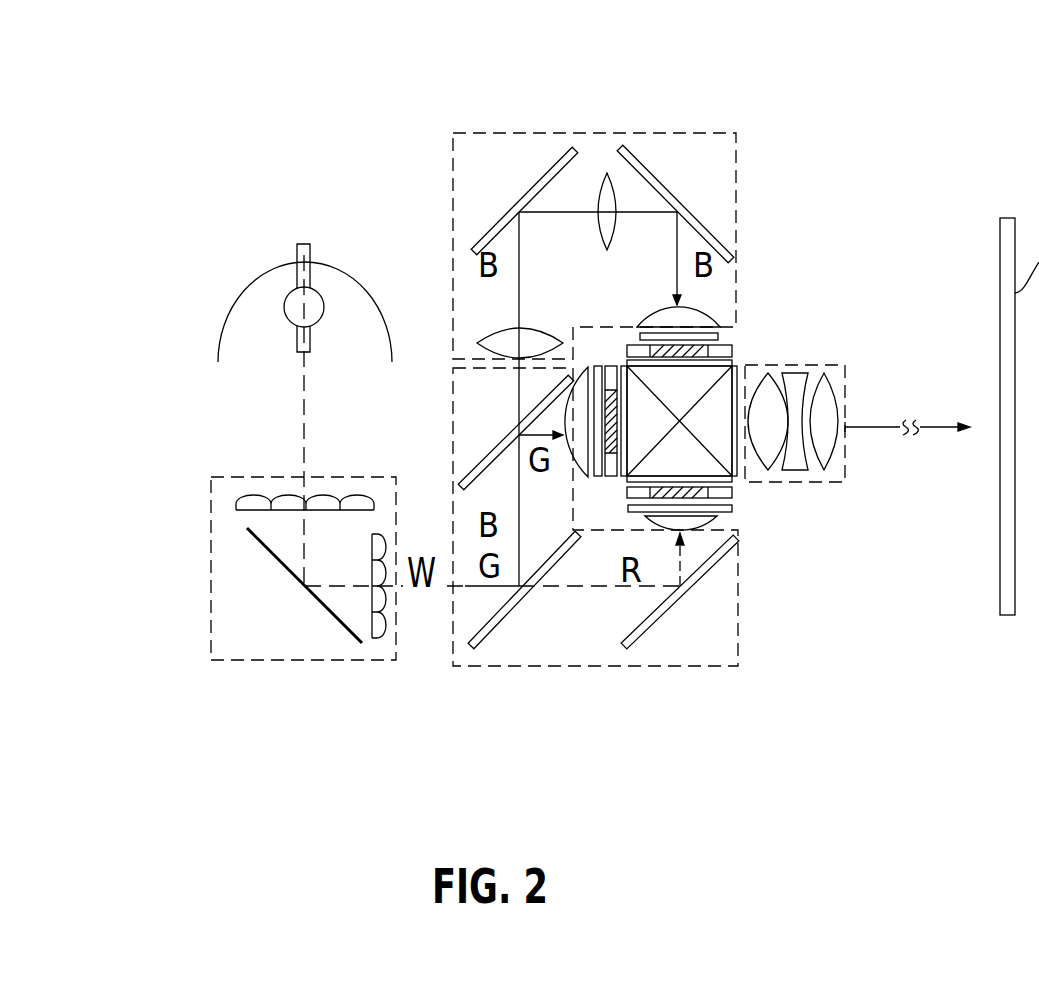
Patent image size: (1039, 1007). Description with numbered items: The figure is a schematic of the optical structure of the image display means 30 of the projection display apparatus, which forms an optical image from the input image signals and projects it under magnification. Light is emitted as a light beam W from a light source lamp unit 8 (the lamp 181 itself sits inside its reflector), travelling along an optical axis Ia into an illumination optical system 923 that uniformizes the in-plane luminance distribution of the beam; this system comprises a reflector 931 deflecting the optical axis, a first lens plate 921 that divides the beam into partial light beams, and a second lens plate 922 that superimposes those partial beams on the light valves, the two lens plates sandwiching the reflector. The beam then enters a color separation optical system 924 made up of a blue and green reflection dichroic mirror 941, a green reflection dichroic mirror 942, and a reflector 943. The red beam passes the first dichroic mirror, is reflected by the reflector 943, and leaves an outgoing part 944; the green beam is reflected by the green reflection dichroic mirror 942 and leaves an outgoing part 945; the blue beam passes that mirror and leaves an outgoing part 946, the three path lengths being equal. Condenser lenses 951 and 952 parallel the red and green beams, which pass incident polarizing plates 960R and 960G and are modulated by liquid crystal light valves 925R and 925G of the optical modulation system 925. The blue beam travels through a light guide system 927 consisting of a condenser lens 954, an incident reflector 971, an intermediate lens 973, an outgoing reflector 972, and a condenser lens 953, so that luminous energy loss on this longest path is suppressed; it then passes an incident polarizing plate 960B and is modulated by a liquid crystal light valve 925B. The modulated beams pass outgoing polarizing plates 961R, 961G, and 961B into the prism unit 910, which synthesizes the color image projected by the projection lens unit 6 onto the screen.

The image display means 30 is at (200, 124).
The light source lamp unit 8 is at (237, 312).
The lamp 181 is at (287, 295).
The optical axis Ia is at (290, 412).
The first lens plate 921 is at (236, 502).
The second lens plate 922 is at (380, 640).
The illumination optical system 923 is at (208, 607).
The reflector 931 is at (327, 617).
The light guide system 927 is at (483, 130).
The color separation optical system 924 is at (740, 648).
The incident reflector 971 is at (493, 220).
The outgoing reflector 972 is at (657, 172).
The intermediate lens 973 is at (606, 172).
The condenser lens 953 is at (703, 306).
The condenser lens 954 is at (497, 330).
The outgoing part 946 is at (493, 353).
The condenser lens 952 is at (586, 366).
The incident polarizing plate 960G is at (578, 414).
The liquid crystal light valve 925G is at (600, 365).
The outgoing polarizing plate 961G is at (612, 478).
The green reflection dichroic mirror 942 is at (490, 450).
The outgoing part 945 is at (561, 448).
The blue and green reflection dichroic mirror 941 is at (485, 641).
The reflector 943 is at (642, 644).
The outgoing part 944 is at (734, 539).
The condenser lens 951 is at (700, 534).
The prism unit 910 is at (723, 393).
The optical modulation system 925 is at (626, 482).
The outgoing polarizing plate 961B is at (731, 352).
The liquid crystal light valve 925B is at (719, 336).
The incident polarizing plate 960B is at (718, 322).
The outgoing polarizing plate 961R is at (735, 486).
The liquid crystal light valve 925R is at (733, 505).
The incident polarizing plate 960R is at (718, 518).
The projection lens unit 6 is at (844, 370).